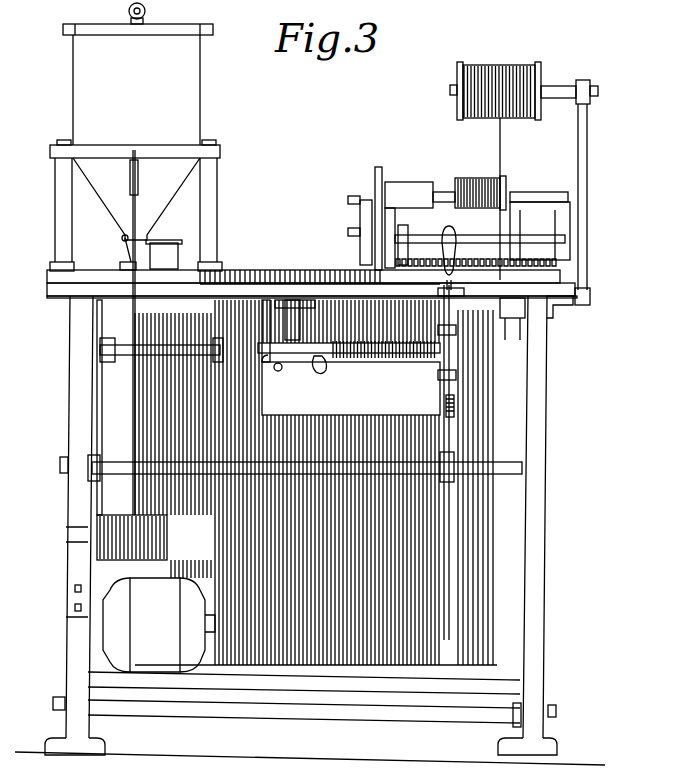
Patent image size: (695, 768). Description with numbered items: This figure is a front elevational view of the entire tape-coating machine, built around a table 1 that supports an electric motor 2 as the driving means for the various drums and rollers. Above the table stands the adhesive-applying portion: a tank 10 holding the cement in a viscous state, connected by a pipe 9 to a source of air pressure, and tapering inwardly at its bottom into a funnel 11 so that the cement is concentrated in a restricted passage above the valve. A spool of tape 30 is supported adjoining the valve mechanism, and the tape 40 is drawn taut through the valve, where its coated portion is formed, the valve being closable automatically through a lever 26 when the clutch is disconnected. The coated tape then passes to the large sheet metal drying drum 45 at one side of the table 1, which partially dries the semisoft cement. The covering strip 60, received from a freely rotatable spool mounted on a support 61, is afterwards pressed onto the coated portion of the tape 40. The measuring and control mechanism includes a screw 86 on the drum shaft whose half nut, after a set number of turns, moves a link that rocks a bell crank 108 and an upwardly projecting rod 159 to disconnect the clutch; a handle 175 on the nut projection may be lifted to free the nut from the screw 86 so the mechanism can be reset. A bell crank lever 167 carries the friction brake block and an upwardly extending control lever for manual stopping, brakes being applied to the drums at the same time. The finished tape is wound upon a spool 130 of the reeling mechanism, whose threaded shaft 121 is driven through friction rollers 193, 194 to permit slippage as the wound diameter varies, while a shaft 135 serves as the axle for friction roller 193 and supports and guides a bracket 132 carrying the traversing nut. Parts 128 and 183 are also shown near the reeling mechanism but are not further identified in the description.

The table 1 is at (533, 390).
The electric motor 2 is at (159, 625).
The pipe 9 is at (127, 11).
The tank 10 is at (195, 112).
The funnel 11 is at (168, 188).
The lever 26 is at (125, 246).
The spool of tape 30 is at (120, 538).
The tape 40 is at (133, 283).
The drying drum 45 is at (490, 598).
The covering strip 60 is at (505, 143).
The support 61 is at (587, 147).
The screw 86 is at (357, 353).
The bell crank 108 is at (375, 373).
The threaded shaft 121 is at (538, 277).
The guide bar 128 is at (540, 195).
The spool 130 is at (452, 192).
The bracket 132 is at (462, 238).
The shaft 135 is at (540, 237).
The rod 159 is at (255, 300).
The bell crank lever 167 is at (467, 453).
The handle 175 is at (325, 360).
The small spool 183 is at (465, 175).
The friction roller 193 is at (367, 217).
The friction roller 194 is at (357, 267).